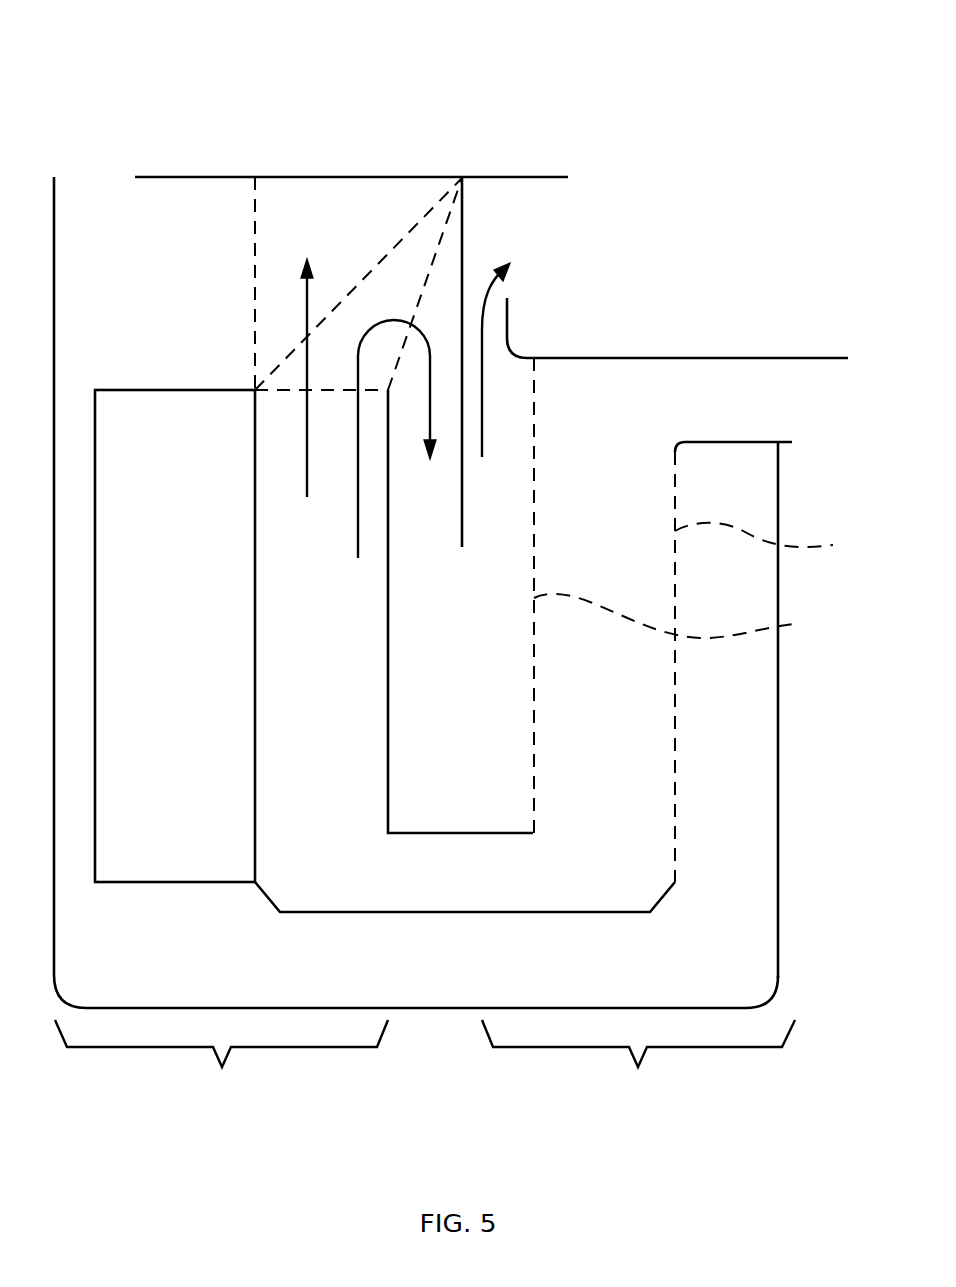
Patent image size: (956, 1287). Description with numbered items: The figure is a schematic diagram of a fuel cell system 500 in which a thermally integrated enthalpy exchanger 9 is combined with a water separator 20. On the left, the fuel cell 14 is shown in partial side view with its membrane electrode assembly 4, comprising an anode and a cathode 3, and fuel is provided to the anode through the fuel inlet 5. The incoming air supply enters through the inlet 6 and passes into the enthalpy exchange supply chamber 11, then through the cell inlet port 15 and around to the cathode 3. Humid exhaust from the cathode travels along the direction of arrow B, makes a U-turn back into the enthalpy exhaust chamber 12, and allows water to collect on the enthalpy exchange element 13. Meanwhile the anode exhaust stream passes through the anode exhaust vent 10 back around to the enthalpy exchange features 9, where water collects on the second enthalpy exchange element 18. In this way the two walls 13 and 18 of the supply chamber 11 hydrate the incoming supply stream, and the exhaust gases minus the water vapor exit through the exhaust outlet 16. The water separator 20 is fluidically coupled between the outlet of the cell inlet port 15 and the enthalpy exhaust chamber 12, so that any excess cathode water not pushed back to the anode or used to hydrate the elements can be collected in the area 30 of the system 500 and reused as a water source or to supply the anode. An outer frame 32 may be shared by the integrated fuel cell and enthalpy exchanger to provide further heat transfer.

The fuel cell system 500 is at (767, 38).
The area of the system 30 is at (322, 196).
The fuel inlet 5 is at (97, 274).
The water separator 20 is at (328, 274).
The exhaust outlet 16 is at (537, 278).
The inlet 6 is at (843, 414).
The enthalpy exchange element 18 is at (772, 539).
The enthalpy exchange element 13 is at (682, 616).
The membrane electrode assembly 4 is at (185, 572).
The cathode 3 is at (187, 824).
The arrow B is at (358, 549).
The enthalpy exhaust chamber 12 is at (445, 686).
The enthalpy exchange supply chamber 11 is at (593, 752).
The cell inlet port 15 is at (577, 904).
The anode exhaust vent 10 is at (427, 972).
The outer frame 32 is at (787, 852).
The fuel cell 14 is at (221, 1074).
The enthalpy exchanger 9 is at (638, 1074).